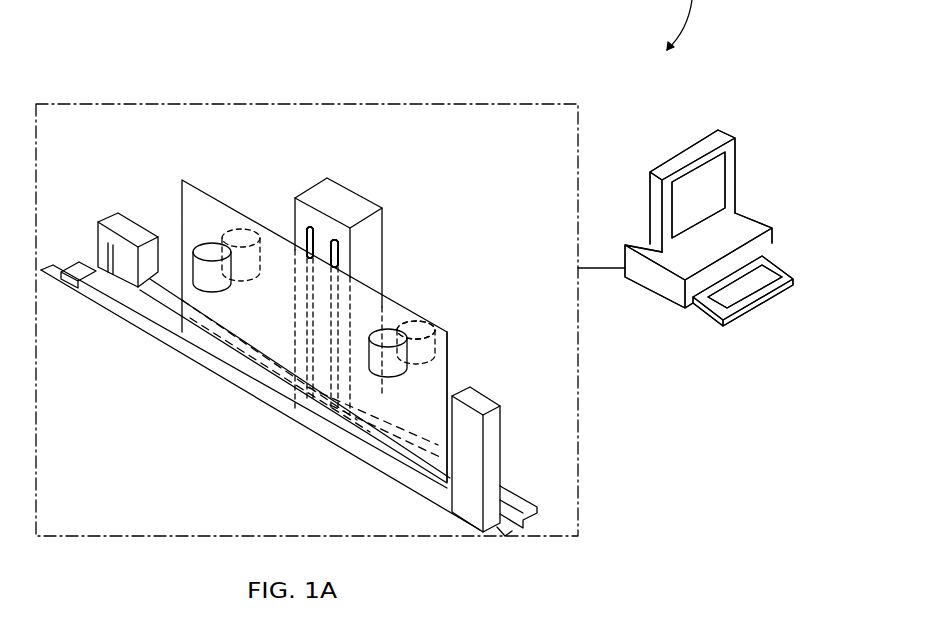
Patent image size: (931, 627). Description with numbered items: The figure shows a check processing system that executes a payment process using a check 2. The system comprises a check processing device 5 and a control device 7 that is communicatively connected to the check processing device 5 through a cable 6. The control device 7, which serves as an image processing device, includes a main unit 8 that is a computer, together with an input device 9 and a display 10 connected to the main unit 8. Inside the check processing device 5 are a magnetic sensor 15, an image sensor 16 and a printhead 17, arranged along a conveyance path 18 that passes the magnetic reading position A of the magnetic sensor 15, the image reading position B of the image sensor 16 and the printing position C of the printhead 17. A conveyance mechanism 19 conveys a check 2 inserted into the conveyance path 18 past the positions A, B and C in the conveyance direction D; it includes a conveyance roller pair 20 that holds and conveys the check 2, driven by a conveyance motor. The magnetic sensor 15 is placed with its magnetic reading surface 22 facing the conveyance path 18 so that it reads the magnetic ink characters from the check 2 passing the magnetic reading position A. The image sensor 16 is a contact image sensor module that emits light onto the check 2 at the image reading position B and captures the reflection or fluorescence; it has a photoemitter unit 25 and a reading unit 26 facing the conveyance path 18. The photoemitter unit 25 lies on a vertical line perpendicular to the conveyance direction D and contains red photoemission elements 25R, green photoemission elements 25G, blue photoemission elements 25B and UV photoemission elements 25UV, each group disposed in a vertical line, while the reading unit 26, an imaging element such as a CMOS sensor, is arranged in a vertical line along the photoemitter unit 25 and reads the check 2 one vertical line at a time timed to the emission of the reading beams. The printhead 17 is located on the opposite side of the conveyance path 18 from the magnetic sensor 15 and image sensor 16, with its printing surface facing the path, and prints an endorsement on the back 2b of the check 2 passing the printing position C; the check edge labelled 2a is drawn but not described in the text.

The check processing device 5 is at (495, 103).
The conveyance path 18 is at (70, 268).
The magnetic sensor 15 is at (124, 222).
The magnetic reading surface 22 is at (104, 258).
The conveyance roller pair 20 is at (207, 250).
The check 2 is at (430, 413).
The edge of recording medium 2a is at (447, 365).
The back of the check 2b is at (405, 403).
The conveyance mechanism 19 is at (427, 306).
The image sensor 16 is at (382, 200).
The photoemitter unit 25 is at (310, 223).
The reading unit 26 is at (335, 233).
The red photoemission elements 25R is at (290, 230).
The green photoemission elements 25G is at (290, 230).
The blue photoemission elements 25B is at (290, 230).
The UV photoemission elements 25UV is at (290, 230).
The printhead 17 is at (465, 428).
The cable 6 is at (607, 268).
The control device 7 is at (742, 128).
The display 10 is at (730, 175).
The main unit 8 is at (663, 292).
The input device 9 is at (777, 270).
The magnetic reading position A is at (108, 262).
The image reading position B is at (305, 330).
The printing position C is at (512, 472).
The conveyance direction D is at (538, 403).